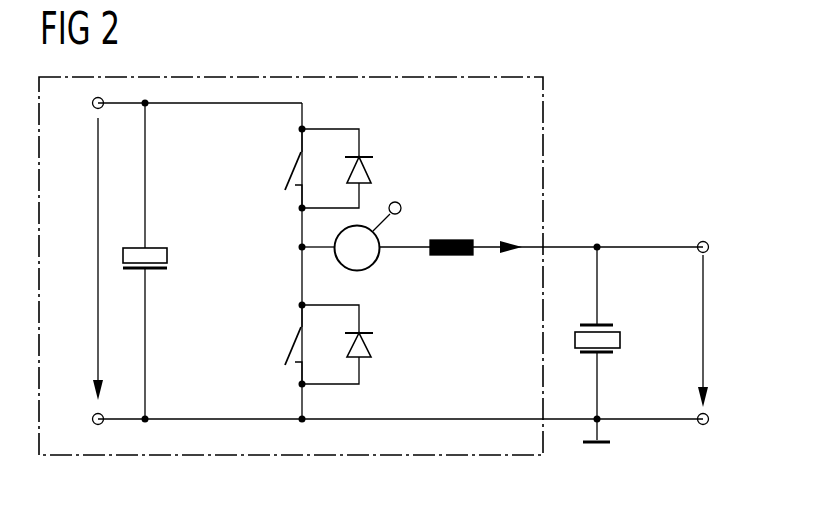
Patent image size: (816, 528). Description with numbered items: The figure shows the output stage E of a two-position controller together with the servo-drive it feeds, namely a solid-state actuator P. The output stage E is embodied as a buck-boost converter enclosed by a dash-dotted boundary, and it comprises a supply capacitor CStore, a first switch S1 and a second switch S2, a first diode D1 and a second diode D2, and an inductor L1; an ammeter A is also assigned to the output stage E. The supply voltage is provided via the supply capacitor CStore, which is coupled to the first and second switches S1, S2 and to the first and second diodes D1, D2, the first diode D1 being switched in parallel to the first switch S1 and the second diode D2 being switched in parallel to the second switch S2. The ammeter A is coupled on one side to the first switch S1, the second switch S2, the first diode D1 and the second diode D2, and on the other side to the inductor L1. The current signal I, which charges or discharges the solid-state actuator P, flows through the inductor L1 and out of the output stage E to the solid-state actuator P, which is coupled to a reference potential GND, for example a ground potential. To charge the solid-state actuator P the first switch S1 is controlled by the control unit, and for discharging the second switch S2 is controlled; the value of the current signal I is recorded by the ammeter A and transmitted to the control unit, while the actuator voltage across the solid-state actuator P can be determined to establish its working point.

The output stage E is at (543, 132).
The supply capacitor CStore is at (167, 256).
The first switch S1 is at (292, 176).
The first diode D1 is at (364, 157).
The second switch S2 is at (292, 343).
The second diode D2 is at (370, 358).
The ammeter A is at (372, 265).
The inductor L1 is at (449, 240).
The current signal I is at (511, 240).
The solid-state actuator P is at (600, 323).
The reference potential GND is at (598, 447).